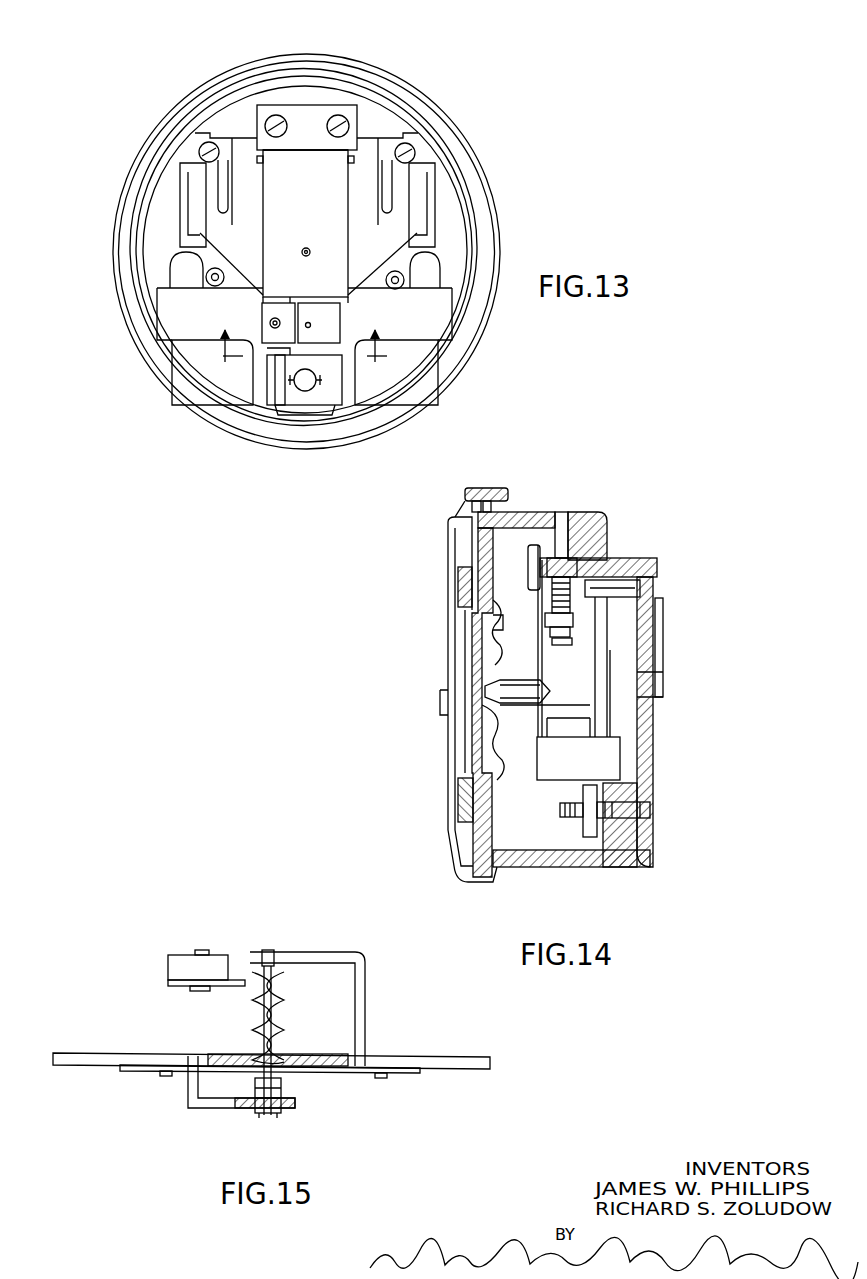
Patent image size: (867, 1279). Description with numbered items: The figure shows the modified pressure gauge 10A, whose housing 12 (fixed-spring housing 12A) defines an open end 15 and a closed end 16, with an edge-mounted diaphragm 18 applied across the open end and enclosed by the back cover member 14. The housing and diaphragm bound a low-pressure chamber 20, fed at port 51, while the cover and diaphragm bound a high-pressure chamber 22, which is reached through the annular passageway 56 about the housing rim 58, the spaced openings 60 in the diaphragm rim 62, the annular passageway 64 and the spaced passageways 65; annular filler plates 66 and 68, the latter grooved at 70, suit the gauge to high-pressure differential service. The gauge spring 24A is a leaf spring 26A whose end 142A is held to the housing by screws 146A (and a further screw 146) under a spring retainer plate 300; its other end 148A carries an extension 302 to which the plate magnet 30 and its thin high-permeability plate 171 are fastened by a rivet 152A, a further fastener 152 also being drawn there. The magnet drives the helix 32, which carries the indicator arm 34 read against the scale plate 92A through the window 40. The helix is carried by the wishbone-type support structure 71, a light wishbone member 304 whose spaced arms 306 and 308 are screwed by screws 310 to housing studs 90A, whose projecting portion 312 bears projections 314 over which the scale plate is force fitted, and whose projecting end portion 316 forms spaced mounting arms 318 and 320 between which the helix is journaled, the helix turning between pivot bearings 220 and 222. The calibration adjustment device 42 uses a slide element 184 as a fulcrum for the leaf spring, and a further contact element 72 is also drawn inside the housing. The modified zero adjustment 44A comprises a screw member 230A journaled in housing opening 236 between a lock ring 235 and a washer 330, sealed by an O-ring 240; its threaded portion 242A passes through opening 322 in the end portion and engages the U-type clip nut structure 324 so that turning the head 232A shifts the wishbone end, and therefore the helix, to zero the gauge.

In FIG. 13, the pressure gauge 10A is at (518, 140).
In FIG. 14, the pressure gauge 10A is at (660, 520).
In FIG. 13, the housing 12A is at (503, 218).
In FIG. 14, the housing 12 is at (592, 515).
In FIG. 14, the back cover member 14 is at (447, 588).
In FIG. 13, the open end 15 is at (167, 435).
In FIG. 14, the open end 15 is at (477, 870).
In FIG. 14, the closed end 16 is at (655, 570).
In FIG. 14, the diaphragm 18 is at (455, 728).
In FIG. 14, the low-pressure chamber 20 is at (510, 545).
In FIG. 14, the high-pressure chamber 22 is at (470, 640).
In FIG. 13, the leaf spring 24A is at (327, 180).
In FIG. 13, the leaf spring 26A is at (322, 219).
In FIG. 14, the leaf spring 26A is at (532, 607).
In FIG. 15, the plate magnet 30 is at (168, 965).
In FIG. 14, the helix 32 is at (605, 765).
In FIG. 15, the helix 32 is at (250, 1015).
In FIG. 14, the indicator arm 34 is at (655, 680).
In FIG. 14, the window 40 is at (665, 620).
In FIG. 14, the adjustment device 42 is at (578, 522).
In FIG. 14, the zero adjustment device 44A is at (660, 826).
In FIG. 13, the port 51 is at (437, 280).
In FIG. 14, the annular chamber or passageway 56 is at (520, 512).
In FIG. 14, the rim 58 is at (490, 490).
In FIG. 14, the spaced openings 60 is at (478, 488).
In FIG. 14, the diaphragm rim 62 is at (470, 500).
In FIG. 14, the annular chamber or passageway 64 is at (462, 505).
In FIG. 14, the spaced passageways 65 is at (452, 528).
In FIG. 14, the annular filler plate 66 is at (497, 820).
In FIG. 14, the annular filler plate 68 is at (455, 830).
In FIG. 14, the groove 70 is at (458, 800).
In FIG. 13, the wishbone-type support structure 71 is at (420, 200).
In FIG. 14, the contact bolt 72 is at (517, 690).
In FIG. 14, the housing studs 90A is at (615, 580).
In FIG. 14, the scale plate 92A is at (660, 598).
In FIG. 13, the leaf spring end 142A is at (307, 160).
In FIG. 13, the terminal screw 146 is at (276, 115).
In FIG. 13, the screws 146A is at (340, 117).
In FIG. 13, the leaf spring end 148A is at (273, 285).
In FIG. 13, the mounting plate 152 is at (268, 322).
In FIG. 15, the rivet 152A is at (207, 950).
In FIG. 15, the plate of high-magnetic permeability 171 is at (165, 988).
In FIG. 13, the slide element 184 is at (260, 167).
In FIG. 14, the slide element 184 is at (545, 622).
In FIG. 15, the jeweled pivot bearing 220 is at (270, 952).
In FIG. 15, the jeweled pivot bearing 222 is at (275, 1115).
In FIG. 14, the screw member 230A is at (615, 845).
In FIG. 14, the head 232A is at (650, 810).
In FIG. 14, the lock ring 235 is at (625, 825).
In FIG. 14, the opening 236 is at (658, 795).
In FIG. 14, the O-ring 240 is at (650, 840).
In FIG. 14, the threaded portion 242A is at (655, 770).
In FIG. 13, the spring retainer plate 300 is at (305, 118).
In FIG. 14, the spring retainer plate 300 is at (566, 512).
In FIG. 13, the extension 302 is at (280, 298).
In FIG. 15, the extension 302 is at (180, 955).
In FIG. 13, the wishbone-shaped member 304 is at (223, 230).
In FIG. 15, the wishbone-shaped member 304 is at (90, 1053).
In FIG. 13, the arm 306 is at (203, 183).
In FIG. 13, the arm 308 is at (425, 165).
In FIG. 13, the screws 310 is at (408, 178).
In FIG. 14, the screws 310 is at (605, 540).
In FIG. 13, the projecting portion 312 is at (237, 147).
In FIG. 15, the projections 314 is at (163, 1080).
In FIG. 13, the projecting end portion 316 is at (270, 353).
In FIG. 14, the projecting end portion 316 is at (585, 790).
In FIG. 14, the mounting arm 318 is at (615, 740).
In FIG. 15, the mounting arm 318 is at (215, 1108).
In FIG. 15, the mounting arm 320 is at (340, 955).
In FIG. 13, the opening 322 is at (305, 392).
In FIG. 13, the U-type clip nut structure 324 is at (333, 393).
In FIG. 14, the U-type clip nut structure 324 is at (590, 820).
In FIG. 14, the washer 330 is at (655, 855).